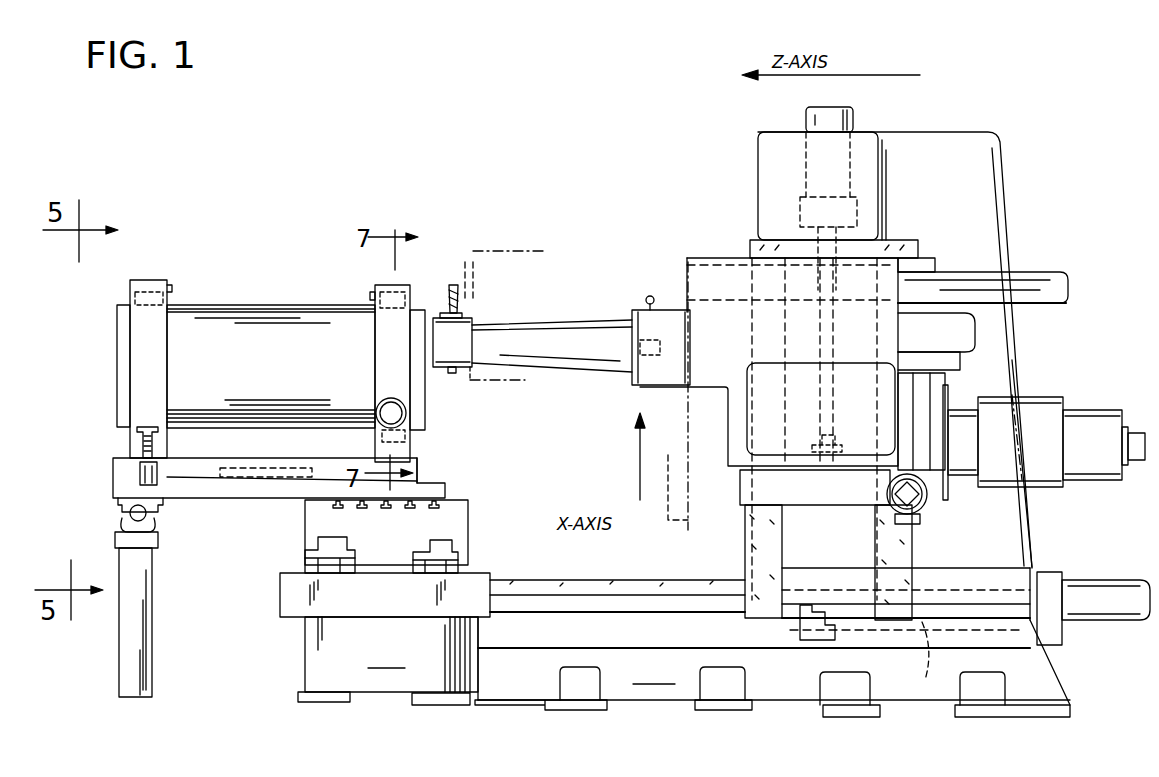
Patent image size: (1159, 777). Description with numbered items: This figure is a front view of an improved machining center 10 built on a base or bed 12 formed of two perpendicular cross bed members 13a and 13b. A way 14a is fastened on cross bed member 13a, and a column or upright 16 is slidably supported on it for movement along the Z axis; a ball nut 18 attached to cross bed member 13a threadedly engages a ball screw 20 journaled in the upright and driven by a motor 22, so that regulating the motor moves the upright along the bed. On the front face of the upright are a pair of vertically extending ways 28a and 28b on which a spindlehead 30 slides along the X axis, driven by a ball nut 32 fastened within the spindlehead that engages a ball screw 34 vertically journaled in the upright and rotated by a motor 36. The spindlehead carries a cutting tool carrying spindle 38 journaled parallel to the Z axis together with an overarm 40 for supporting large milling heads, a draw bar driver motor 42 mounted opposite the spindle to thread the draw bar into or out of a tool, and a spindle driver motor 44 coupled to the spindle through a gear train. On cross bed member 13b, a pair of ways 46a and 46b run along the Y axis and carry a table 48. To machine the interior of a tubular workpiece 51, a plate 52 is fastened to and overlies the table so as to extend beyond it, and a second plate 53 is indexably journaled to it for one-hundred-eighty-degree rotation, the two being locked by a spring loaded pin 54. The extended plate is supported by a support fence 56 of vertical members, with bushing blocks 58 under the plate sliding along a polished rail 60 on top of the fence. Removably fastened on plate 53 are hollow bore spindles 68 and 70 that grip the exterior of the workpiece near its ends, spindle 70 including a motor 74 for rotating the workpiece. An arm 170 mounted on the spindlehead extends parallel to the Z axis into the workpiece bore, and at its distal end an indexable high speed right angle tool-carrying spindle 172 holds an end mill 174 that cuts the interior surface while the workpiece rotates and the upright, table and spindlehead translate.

The machining center 10 is at (1040, 214).
The base or bed 12 is at (520, 690).
The cross bed member 13a is at (772, 668).
The cross bed member 13b is at (385, 639).
The way 14a is at (640, 578).
The column or upright 16 is at (997, 500).
The ball nut 18 is at (795, 614).
The ball screw 20 is at (922, 663).
The motor 22 is at (1118, 610).
The way 28a is at (775, 548).
The way 28b is at (905, 548).
The spindlehead 30 is at (712, 393).
The ball nut 32 is at (822, 465).
The ball screw 34 is at (830, 418).
The motor 36 is at (855, 125).
The cutting tool carrying spindle 38 is at (668, 372).
The overarm 40 is at (1055, 294).
The draw bar driver motor 42 is at (965, 340).
The spindle driver motor 44 is at (1090, 420).
The way 46a is at (305, 555).
The way 46b is at (440, 560).
The table 48 is at (458, 520).
The tubular workpiece 51 is at (238, 310).
The plate 52 is at (200, 485).
The second plate 53 is at (420, 470).
The spring loaded pin 54 is at (135, 432).
The support fence 56 is at (127, 637).
The bushing block 58 is at (160, 520).
The rail 60 is at (125, 515).
The hollow bore spindle 68 is at (152, 280).
The hollow bore spindle 70 is at (390, 283).
The motor 74 is at (388, 400).
The arm 170 is at (553, 330).
The tool-carrying spindle 172 is at (445, 340).
The end mill 174 is at (447, 283).